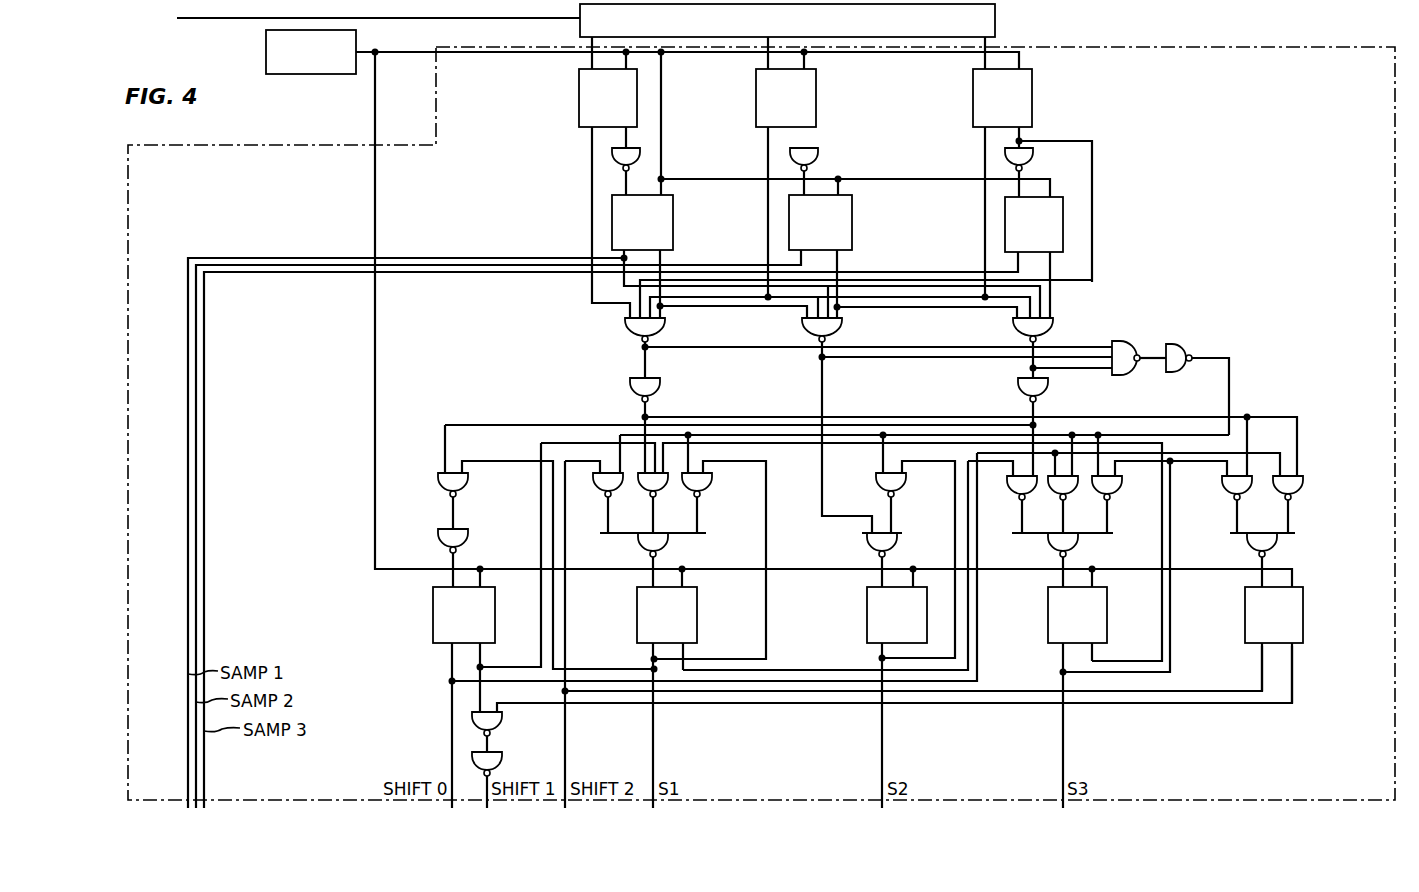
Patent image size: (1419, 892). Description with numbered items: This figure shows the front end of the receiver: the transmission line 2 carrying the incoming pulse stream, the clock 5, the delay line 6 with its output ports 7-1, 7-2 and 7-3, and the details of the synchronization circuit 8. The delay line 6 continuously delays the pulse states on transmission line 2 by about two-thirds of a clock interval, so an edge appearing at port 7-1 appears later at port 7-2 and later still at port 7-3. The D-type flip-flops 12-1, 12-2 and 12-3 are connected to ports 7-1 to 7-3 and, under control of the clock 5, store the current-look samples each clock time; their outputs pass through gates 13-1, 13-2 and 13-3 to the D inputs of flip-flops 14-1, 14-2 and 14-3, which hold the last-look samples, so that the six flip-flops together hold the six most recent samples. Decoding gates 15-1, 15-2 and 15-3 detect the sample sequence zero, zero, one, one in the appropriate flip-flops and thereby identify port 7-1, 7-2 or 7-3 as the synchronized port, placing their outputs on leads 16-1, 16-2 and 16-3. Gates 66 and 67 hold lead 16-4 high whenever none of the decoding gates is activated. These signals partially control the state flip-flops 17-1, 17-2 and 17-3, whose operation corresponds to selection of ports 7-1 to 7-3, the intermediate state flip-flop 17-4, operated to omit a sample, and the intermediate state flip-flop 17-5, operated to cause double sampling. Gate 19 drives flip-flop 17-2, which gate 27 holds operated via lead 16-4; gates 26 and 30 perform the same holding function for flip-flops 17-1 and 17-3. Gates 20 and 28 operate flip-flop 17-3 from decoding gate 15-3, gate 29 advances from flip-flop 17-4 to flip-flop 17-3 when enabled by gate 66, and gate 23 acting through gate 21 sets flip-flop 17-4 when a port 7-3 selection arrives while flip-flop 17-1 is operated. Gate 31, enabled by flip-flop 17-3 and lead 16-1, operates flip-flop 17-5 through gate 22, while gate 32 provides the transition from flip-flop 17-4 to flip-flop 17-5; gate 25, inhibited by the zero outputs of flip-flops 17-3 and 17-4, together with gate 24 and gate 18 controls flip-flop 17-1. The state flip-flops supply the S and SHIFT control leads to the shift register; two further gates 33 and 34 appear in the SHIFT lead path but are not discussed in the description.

The transmission line 2 is at (216, 20).
The clock 5 is at (319, 74).
The delay line 6 is at (995, 21).
The synchronization circuit 8 is at (1195, 62).
The delay line output port 7-1 is at (579, 66).
The delay line output port 7-2 is at (756, 65).
The delay line output port 7-3 is at (973, 65).
The current-look flip-flop 12-1 is at (579, 98).
The current-look flip-flop 12-2 is at (756, 98).
The current-look flip-flop 12-3 is at (973, 98).
The gate 13-1 is at (615, 161).
The gate 13-2 is at (825, 171).
The gate 13-3 is at (1040, 172).
The last-look flip-flop 14-1 is at (673, 223).
The last-look flip-flop 14-2 is at (852, 222).
The last-look flip-flop 14-3 is at (1063, 228).
The decoding gate 15-1 is at (868, 348).
The decoding gate 15-2 is at (957, 339).
The decoding gate 15-3 is at (1062, 348).
The lead 16-1 is at (645, 346).
The lead 16-2 is at (821, 357).
The lead 16-3 is at (1029, 365).
The lead 16-4 is at (1233, 395).
The gate 66 is at (1176, 346).
The gate 67 is at (1139, 367).
The gate 18 is at (653, 560).
The gate 19 is at (889, 560).
The gate 20 is at (1062, 560).
The gate 21 is at (463, 558).
The gate 22 is at (1262, 560).
The gate 23 is at (463, 501).
The gate 24 is at (599, 503).
The gate 25 is at (660, 503).
The gate 26 is at (705, 503).
The gate 27 is at (900, 503).
The gate 28 is at (1012, 504).
The gate 29 is at (1071, 504).
The gate 30 is at (1116, 504).
The gate 31 is at (1228, 504).
The gate 32 is at (1297, 504).
The inverter 33 is at (499, 731).
The inverter 34 is at (499, 779).
The state flip-flop 17-1 is at (637, 610).
The state flip-flop 17-2 is at (867, 610).
The state flip-flop 17-3 is at (1048, 611).
The state flip-flop 17-4 is at (433, 610).
The state flip-flop 17-5 is at (1245, 616).